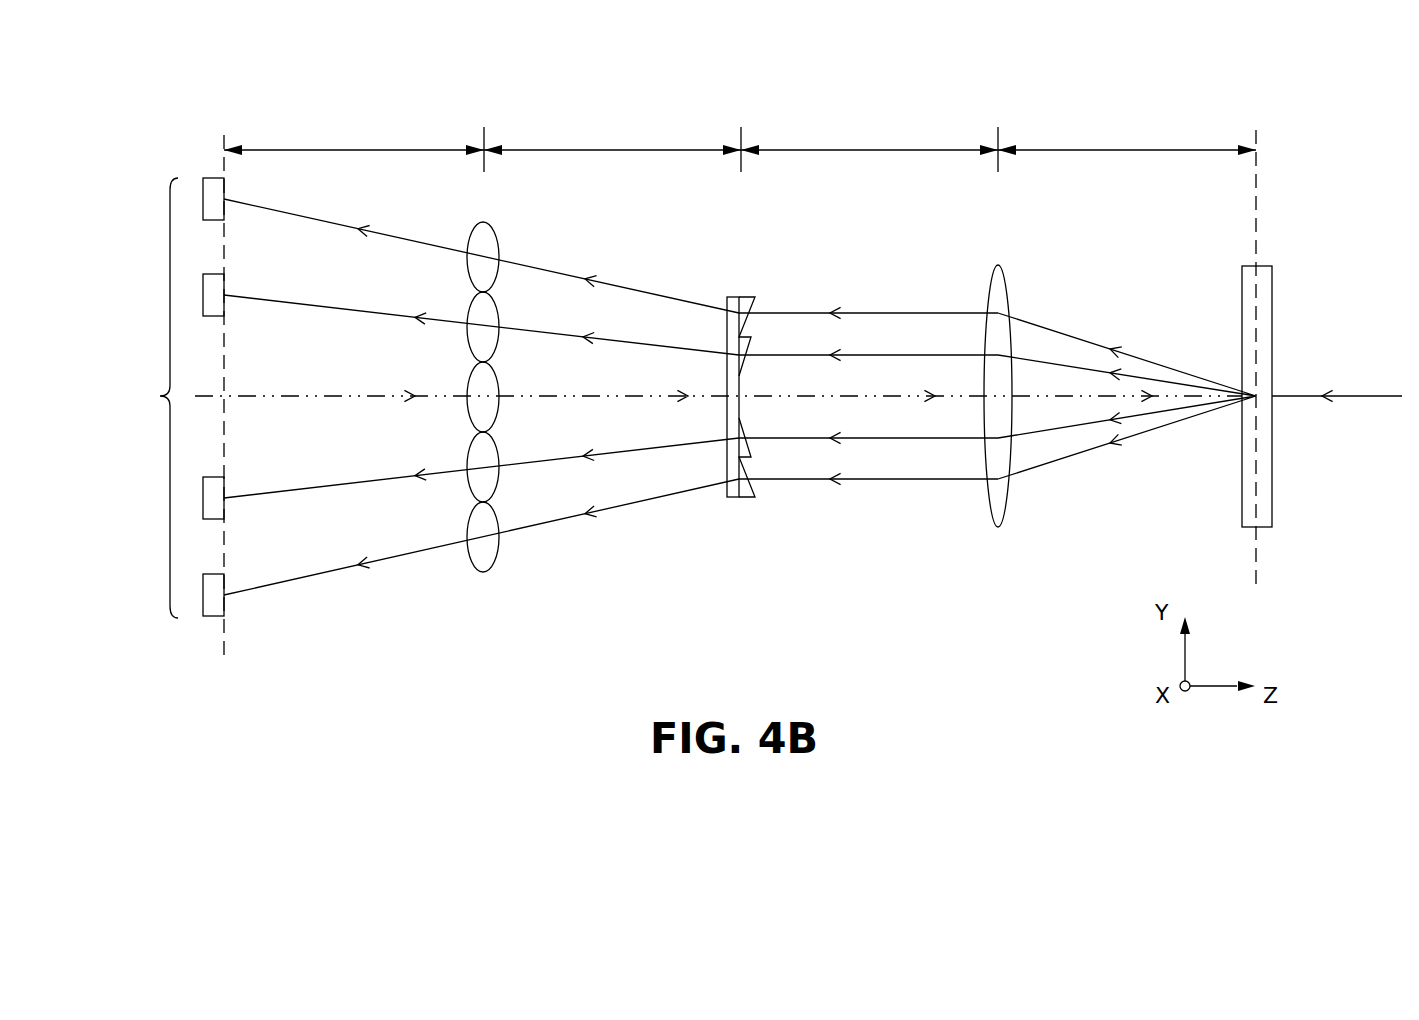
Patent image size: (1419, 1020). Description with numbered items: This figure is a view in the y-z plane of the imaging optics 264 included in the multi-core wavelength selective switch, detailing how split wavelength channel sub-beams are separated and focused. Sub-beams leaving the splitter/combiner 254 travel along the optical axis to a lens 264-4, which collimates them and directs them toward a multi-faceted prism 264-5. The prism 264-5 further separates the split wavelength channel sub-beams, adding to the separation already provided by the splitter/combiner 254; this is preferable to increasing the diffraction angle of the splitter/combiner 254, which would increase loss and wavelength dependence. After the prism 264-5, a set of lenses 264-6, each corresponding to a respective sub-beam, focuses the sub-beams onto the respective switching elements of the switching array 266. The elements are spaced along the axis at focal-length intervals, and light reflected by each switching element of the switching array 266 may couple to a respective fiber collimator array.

The imaging optics 264 is at (388, 78).
The switching array 266 is at (165, 397).
The set of lenses 264-6 is at (489, 419).
The multi-faceted prism 264-5 is at (742, 422).
The lens 264-4 is at (993, 419).
The splitter/combiner 254 is at (1286, 357).